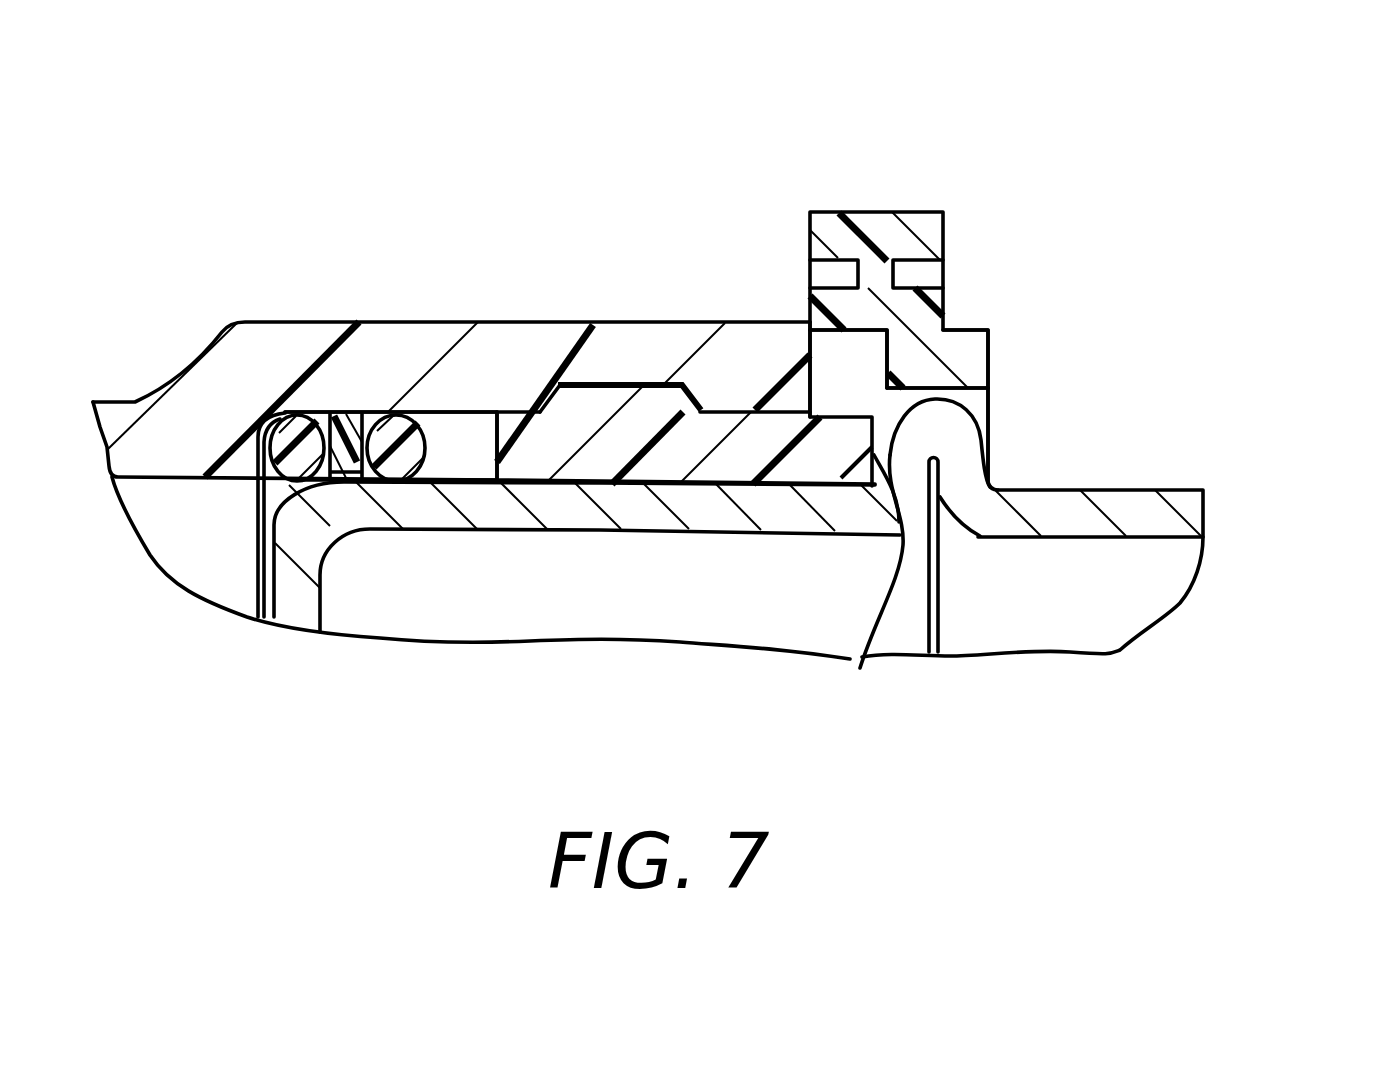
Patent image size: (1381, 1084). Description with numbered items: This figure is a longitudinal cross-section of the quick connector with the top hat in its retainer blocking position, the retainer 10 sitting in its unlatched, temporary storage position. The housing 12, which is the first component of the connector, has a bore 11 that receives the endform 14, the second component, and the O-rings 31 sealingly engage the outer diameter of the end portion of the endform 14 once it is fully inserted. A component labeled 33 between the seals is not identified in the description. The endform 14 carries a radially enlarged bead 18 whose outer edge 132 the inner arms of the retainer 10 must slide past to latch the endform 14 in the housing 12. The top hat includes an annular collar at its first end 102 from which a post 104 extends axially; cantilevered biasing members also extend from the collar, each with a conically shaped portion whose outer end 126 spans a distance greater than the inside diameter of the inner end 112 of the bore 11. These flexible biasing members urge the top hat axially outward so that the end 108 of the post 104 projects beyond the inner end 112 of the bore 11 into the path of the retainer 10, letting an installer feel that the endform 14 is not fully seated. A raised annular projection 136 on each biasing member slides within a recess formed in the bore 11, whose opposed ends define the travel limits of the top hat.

The retainer 10 is at (955, 140).
The bore 11 is at (446, 428).
The housing 12 is at (116, 398).
The endform 14 is at (1192, 488).
The bead 18 is at (952, 447).
The O-rings 31 is at (288, 427).
The spacer 33 is at (372, 410).
The first end 102 is at (492, 443).
The post 104 is at (884, 441).
The end 108 is at (861, 668).
The inner end 112 is at (815, 343).
The outer end 126 is at (818, 397).
The outer edge 132 is at (950, 406).
The raised annular projection 136 is at (654, 384).